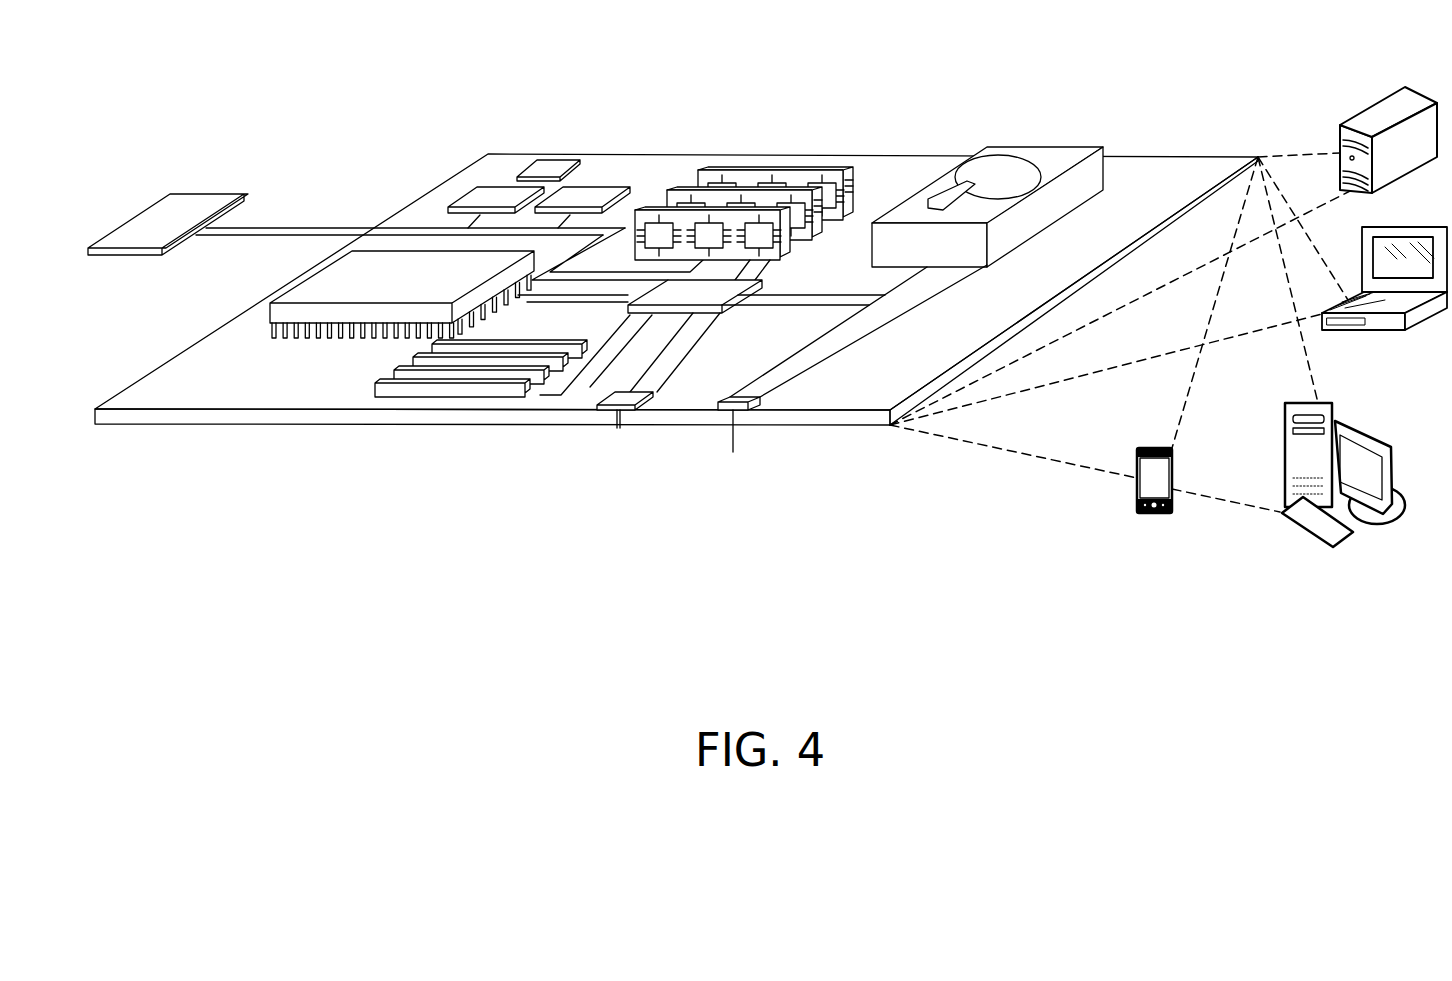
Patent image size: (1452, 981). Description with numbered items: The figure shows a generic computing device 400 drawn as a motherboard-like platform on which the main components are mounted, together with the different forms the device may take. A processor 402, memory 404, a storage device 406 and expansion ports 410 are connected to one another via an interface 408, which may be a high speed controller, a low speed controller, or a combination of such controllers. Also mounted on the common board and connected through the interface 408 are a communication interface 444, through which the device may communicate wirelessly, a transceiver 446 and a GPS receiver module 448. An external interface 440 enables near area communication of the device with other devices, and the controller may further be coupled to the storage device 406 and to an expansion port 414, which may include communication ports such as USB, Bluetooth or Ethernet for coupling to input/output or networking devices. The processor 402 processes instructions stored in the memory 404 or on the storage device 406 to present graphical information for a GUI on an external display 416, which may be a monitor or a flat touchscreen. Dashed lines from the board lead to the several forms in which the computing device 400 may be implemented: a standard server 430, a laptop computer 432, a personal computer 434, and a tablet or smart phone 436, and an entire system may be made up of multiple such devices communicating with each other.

The computing device 400 is at (414, 112).
The processor 402 is at (294, 281).
The memory 404 is at (781, 168).
The storage device 406 is at (1033, 146).
The interface 408 is at (629, 312).
The expansion ports 410 is at (405, 369).
The expansion port 414 is at (762, 401).
The display 416 is at (202, 207).
The standard server 430 is at (1364, 117).
The laptop computer 432 is at (1423, 226).
The personal computer 434 is at (1386, 425).
The tablet/smart phone 436 is at (1148, 513).
The external interface 440 is at (640, 392).
The communication interface 444 is at (497, 188).
The transceiver 446 is at (553, 161).
The GPS receiver module 448 is at (590, 190).